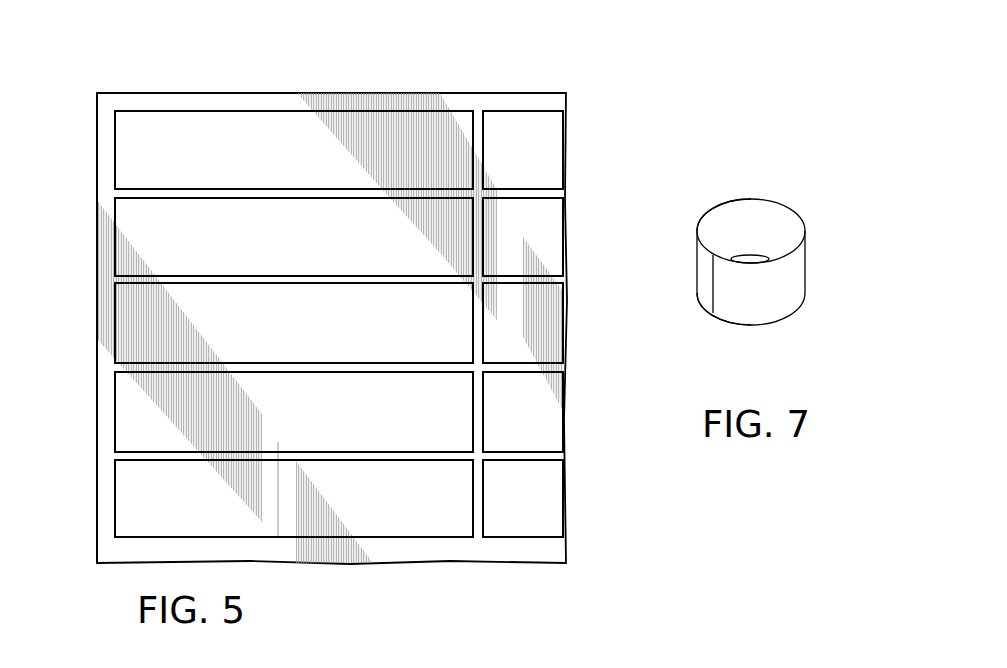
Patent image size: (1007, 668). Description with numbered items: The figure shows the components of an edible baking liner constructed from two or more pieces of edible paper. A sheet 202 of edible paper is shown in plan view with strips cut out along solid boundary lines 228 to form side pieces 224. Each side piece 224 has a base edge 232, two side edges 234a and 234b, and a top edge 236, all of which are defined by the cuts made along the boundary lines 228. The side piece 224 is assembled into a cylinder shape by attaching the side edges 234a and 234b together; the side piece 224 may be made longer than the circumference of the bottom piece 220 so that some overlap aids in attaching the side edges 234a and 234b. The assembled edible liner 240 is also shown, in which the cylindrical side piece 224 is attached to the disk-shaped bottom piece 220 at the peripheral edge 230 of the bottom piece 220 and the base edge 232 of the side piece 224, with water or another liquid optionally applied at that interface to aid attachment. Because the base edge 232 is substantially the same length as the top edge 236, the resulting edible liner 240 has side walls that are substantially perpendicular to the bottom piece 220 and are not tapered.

In FIG. 5, the sheet of edible paper 202 is at (533, 77).
In FIG. 5, the side edge 234a is at (116, 139).
In FIG. 5, the side edge 234b is at (473, 130).
In FIG. 5, the top edge 236 is at (237, 111).
In FIG. 7, the top edge 236 is at (716, 204).
In FIG. 5, the side piece 224 is at (286, 171).
In FIG. 7, the side piece 224 is at (742, 243).
In FIG. 5, the boundary lines 228 is at (115, 189).
In FIG. 5, the base edge 232 is at (194, 193).
In FIG. 7, the base edge 232 is at (776, 334).
In FIG. 7, the bottom piece 220 is at (760, 259).
In FIG. 7, the edible liner 240 is at (810, 202).
In FIG. 7, the peripheral edge 230 is at (787, 315).